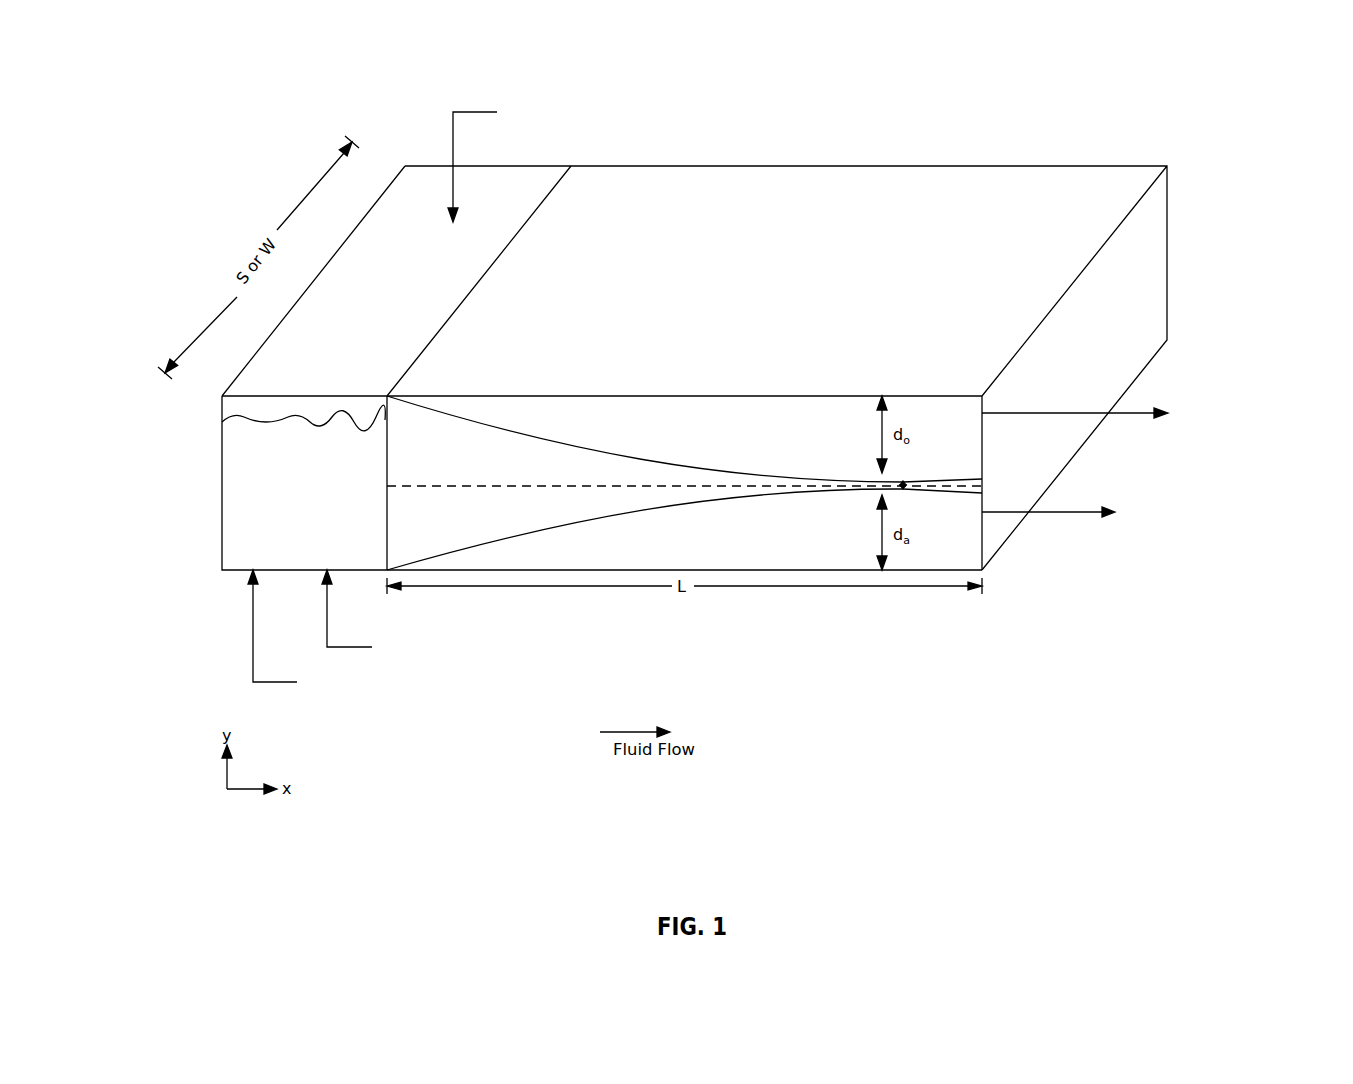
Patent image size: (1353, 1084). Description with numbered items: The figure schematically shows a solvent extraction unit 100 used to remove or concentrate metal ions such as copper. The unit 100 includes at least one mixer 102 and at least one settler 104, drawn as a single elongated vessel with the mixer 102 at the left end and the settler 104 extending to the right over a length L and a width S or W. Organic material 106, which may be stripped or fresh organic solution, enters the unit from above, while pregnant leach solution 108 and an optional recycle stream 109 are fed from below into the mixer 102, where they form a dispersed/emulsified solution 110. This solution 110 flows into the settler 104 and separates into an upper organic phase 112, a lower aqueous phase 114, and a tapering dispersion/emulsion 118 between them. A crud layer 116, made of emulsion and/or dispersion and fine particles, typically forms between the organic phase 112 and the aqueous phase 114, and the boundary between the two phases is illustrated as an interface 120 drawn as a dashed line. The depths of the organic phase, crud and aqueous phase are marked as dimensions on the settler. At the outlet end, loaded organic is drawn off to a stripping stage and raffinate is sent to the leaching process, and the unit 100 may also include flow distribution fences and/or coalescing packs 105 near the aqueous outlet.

The solvent extraction unit 100 is at (788, 118).
The mixer 102 is at (253, 397).
The settler 104 is at (932, 396).
The flow distribution fences and/or coalescing packs 105 is at (982, 541).
The organic material 106 is at (539, 162).
The pregnant leach solution 108 is at (463, 613).
The recycle stream 109 is at (329, 630).
The dispersed/emulsified solution 110 is at (250, 523).
The organic phase 112 is at (965, 417).
The aqueous phase 114 is at (937, 555).
The crud layer 116 is at (982, 479).
The dispersion/emulsion 118 is at (413, 540).
The interface 120 is at (470, 487).